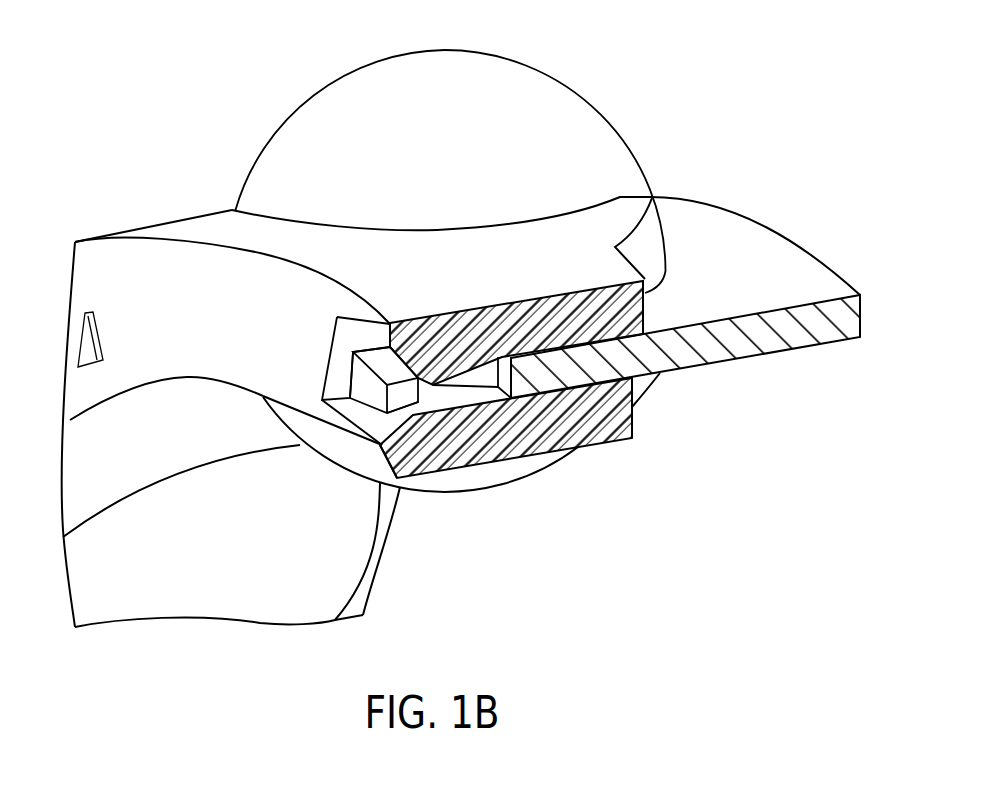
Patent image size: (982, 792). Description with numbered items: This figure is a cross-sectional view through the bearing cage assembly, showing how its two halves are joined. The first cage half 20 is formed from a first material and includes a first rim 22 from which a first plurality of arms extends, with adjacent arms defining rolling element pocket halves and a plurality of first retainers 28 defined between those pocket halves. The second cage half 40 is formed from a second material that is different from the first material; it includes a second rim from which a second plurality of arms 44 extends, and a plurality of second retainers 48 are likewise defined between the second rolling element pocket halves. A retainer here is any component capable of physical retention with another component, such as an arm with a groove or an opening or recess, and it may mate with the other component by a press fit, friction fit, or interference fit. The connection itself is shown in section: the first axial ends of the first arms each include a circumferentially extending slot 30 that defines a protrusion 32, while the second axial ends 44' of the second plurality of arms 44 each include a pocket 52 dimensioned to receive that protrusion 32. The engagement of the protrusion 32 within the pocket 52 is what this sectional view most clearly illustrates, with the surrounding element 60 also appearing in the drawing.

The first cage half 20 is at (178, 213).
The first rim 22 is at (395, 337).
The first retainers 28 is at (430, 375).
The circumferentially extending slot 30 is at (450, 385).
The protrusion 32 is at (430, 385).
The second cage half 40 is at (779, 235).
The second plurality of arms 44 is at (685, 357).
The second axial ends 44' is at (412, 475).
The second retainers 48 is at (505, 372).
The pocket 52 is at (507, 380).
The ring 60 is at (536, 78).